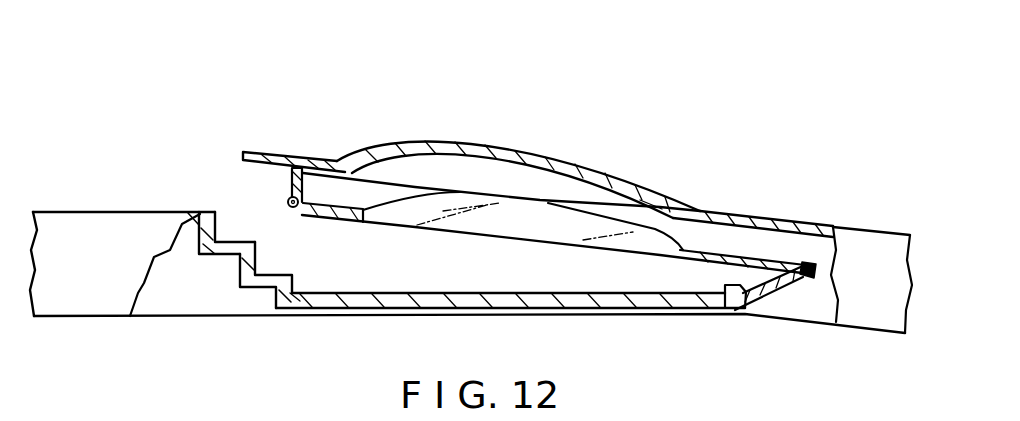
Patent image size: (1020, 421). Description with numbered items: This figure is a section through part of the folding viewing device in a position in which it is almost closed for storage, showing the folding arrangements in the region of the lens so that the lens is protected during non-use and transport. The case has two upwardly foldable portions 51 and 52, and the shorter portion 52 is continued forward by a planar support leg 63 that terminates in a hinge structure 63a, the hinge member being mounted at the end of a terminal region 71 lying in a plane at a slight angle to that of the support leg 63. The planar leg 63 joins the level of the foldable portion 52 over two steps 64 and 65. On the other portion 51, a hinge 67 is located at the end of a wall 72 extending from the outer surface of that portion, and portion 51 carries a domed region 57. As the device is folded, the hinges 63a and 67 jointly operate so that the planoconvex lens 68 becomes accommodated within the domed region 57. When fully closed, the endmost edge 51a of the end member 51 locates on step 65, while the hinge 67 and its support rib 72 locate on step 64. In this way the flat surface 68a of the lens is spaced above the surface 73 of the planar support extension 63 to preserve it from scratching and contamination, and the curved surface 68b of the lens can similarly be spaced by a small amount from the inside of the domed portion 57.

The foldable portion 51 is at (793, 223).
The endmost edge of end member 51a is at (240, 150).
The foldable portion 52 is at (105, 234).
The domed region 57 is at (546, 156).
The planar support leg 63 is at (330, 312).
The hinge structure 63a is at (810, 278).
The step 64 is at (278, 262).
The step 65 is at (220, 250).
The hinge 67 is at (288, 203).
The planoconvex lens 68 is at (640, 243).
The flat side of lens 68a is at (578, 247).
The curved surface of lens 68b is at (653, 193).
The terminal region 71 is at (778, 295).
The wall 72 is at (290, 176).
The surface of planar support extension 73 is at (400, 308).